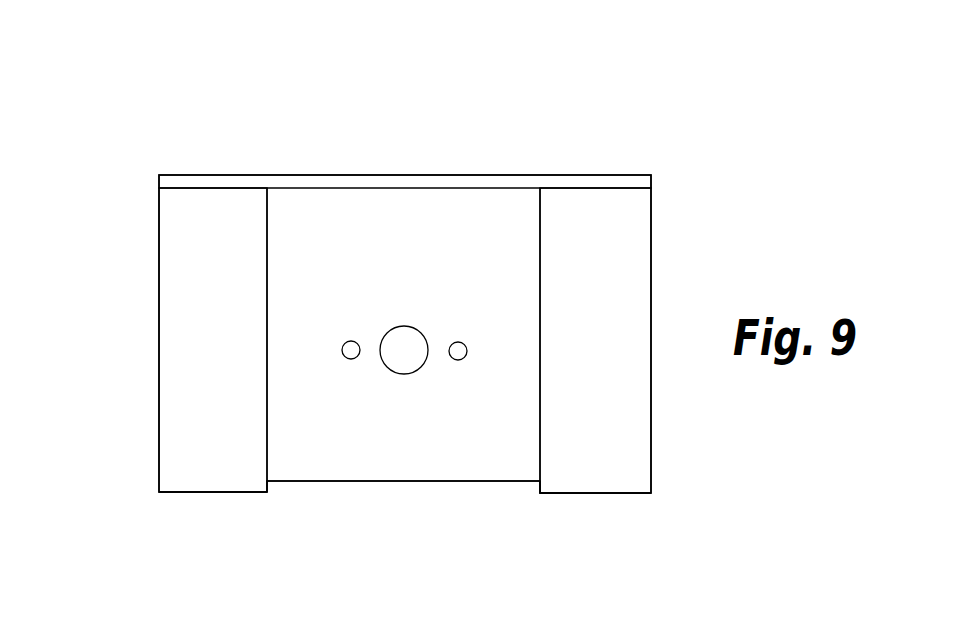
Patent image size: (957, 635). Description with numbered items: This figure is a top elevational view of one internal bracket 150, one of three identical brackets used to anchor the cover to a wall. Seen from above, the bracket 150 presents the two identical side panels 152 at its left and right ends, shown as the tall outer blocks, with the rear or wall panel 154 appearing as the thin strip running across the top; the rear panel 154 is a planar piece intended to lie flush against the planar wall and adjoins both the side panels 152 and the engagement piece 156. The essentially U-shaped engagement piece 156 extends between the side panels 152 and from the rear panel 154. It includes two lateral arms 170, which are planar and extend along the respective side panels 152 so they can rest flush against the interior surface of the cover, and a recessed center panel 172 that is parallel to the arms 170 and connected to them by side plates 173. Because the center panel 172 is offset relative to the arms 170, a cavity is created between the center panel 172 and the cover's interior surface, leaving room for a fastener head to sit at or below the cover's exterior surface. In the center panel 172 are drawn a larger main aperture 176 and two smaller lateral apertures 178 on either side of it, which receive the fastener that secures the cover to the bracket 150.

The internal bracket 150 is at (364, 132).
The side panel 152 is at (159, 292).
The rear or wall panel 154 is at (513, 175).
The engagement piece 156 is at (540, 481).
The lateral arm 170 is at (228, 455).
The recessed center panel 172 is at (360, 445).
The side plate 173 is at (267, 395).
The main aperture 176 is at (403, 342).
The lateral aperture 178 is at (351, 359).